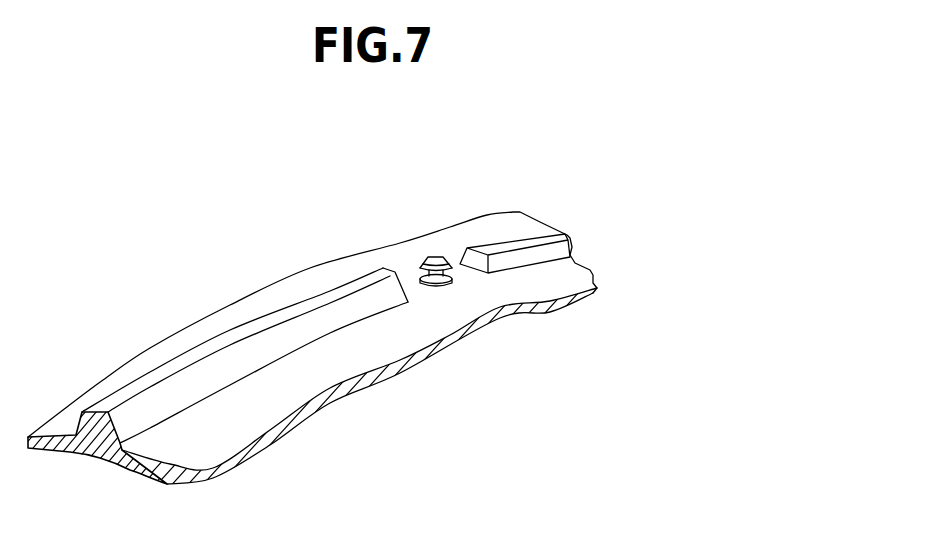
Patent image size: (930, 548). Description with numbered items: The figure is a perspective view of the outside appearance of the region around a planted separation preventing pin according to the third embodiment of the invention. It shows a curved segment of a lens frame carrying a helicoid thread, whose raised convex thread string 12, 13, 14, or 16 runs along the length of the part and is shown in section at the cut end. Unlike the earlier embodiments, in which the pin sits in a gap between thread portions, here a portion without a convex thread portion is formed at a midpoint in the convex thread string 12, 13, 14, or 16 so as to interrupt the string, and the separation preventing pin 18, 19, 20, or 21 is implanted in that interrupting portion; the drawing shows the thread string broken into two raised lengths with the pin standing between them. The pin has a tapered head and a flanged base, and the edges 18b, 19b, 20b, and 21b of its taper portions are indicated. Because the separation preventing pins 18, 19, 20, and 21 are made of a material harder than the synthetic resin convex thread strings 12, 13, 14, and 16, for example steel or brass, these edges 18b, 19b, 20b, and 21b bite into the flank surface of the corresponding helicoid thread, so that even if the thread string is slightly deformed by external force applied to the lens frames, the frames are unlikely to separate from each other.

The convex thread string 12 is at (356, 365).
The convex thread string 13 is at (356, 365).
The convex thread string 14 is at (356, 365).
The convex thread string 16 is at (518, 255).
The separation preventing pin 18 is at (561, 289).
The separation preventing pin 19 is at (561, 289).
The separation preventing pin 20 is at (561, 289).
The separation preventing pin 21 is at (561, 289).
The edge of taper portion 18b is at (561, 289).
The edge of taper portion 19b is at (561, 289).
The edge of taper portion 20b is at (561, 289).
The edge of taper portion 21b is at (438, 248).